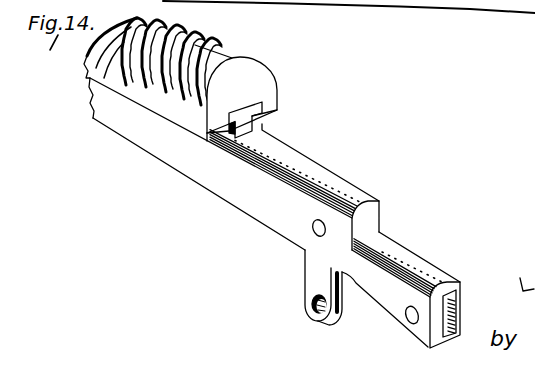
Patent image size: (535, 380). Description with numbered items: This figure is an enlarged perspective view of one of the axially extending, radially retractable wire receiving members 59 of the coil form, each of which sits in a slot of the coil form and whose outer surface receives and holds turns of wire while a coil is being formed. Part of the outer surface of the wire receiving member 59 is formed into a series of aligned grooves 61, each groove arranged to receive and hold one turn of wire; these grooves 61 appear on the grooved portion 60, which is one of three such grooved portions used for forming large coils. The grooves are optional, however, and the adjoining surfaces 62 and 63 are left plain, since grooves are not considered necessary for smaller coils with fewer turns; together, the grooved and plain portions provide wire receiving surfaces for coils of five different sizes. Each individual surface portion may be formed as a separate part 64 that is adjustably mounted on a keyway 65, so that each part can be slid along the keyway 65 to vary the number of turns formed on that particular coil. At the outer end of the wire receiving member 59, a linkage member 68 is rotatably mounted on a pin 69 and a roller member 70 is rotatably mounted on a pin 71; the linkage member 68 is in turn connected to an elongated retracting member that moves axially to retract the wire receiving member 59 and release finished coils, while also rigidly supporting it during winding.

The wire receiving member 59 is at (308, 157).
The grooved portion 60 is at (262, 67).
The grooves 61 is at (216, 53).
The surface 62 is at (362, 191).
The surface 63 is at (418, 260).
The separate part 64 is at (269, 91).
The keyway 65 is at (209, 146).
The linkage member 68 is at (323, 279).
The pin 69 is at (313, 229).
The roller member 70 is at (454, 320).
The pin 71 is at (407, 316).